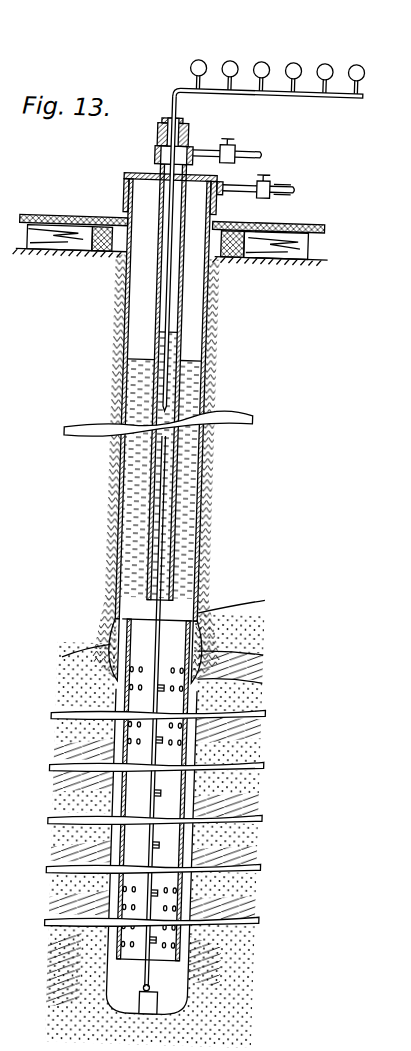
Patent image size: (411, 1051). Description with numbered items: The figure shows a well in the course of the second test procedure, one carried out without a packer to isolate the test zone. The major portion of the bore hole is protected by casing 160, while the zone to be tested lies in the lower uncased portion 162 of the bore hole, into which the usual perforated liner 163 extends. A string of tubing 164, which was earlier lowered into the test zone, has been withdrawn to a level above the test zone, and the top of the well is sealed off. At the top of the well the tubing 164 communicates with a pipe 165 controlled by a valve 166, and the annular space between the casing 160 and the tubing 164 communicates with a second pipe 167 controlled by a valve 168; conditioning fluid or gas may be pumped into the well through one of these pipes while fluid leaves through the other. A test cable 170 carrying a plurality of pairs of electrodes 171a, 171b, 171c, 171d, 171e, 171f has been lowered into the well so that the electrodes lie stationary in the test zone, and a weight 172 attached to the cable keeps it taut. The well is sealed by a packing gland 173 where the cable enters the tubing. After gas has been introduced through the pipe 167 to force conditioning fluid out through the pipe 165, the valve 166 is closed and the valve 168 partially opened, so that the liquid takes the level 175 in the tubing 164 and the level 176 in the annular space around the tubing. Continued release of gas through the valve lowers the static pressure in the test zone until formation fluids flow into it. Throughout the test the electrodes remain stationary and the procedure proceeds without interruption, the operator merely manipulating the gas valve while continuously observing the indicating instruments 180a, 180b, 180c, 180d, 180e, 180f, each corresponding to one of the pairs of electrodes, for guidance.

The casing 160 is at (204, 475).
The lower uncased portion 162 is at (128, 743).
The perforated liner 163 is at (131, 902).
The tubing 164 is at (150, 514).
The pipe 165 is at (190, 149).
The valve 166 is at (223, 144).
The second pipe 167 is at (286, 187).
The valve 168 is at (258, 178).
The test cable 170 is at (158, 93).
The pair of electrodes 171a is at (171, 688).
The pair of electrodes 171b is at (171, 740).
The pair of electrodes 171c is at (171, 793).
The pair of electrodes 171d is at (171, 845).
The pair of electrodes 171e is at (171, 893).
The pair of electrodes 171f is at (171, 940).
The weight 172 is at (155, 1003).
The packing gland 173 is at (146, 141).
The level 175 is at (172, 330).
The level 176 is at (126, 362).
The indicating instrument 180a is at (184, 59).
The indicating instrument 180b is at (216, 59).
The indicating instrument 180c is at (250, 52).
The indicating instrument 180d is at (280, 59).
The indicating instrument 180e is at (312, 59).
The indicating instrument 180f is at (343, 59).